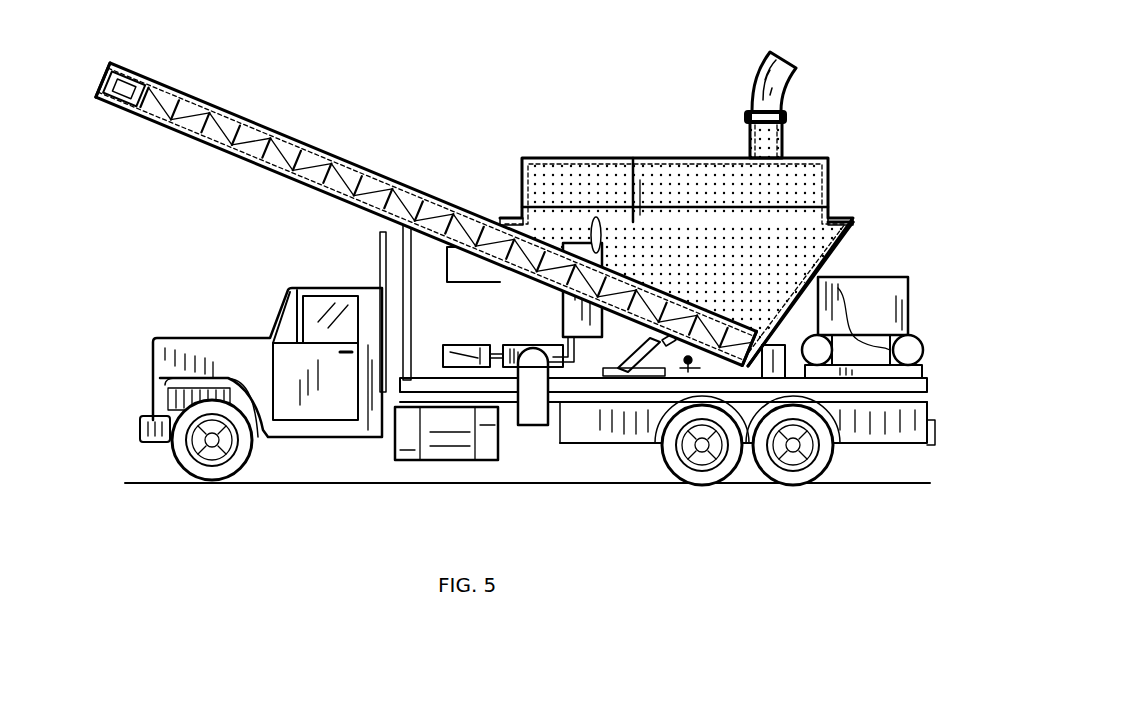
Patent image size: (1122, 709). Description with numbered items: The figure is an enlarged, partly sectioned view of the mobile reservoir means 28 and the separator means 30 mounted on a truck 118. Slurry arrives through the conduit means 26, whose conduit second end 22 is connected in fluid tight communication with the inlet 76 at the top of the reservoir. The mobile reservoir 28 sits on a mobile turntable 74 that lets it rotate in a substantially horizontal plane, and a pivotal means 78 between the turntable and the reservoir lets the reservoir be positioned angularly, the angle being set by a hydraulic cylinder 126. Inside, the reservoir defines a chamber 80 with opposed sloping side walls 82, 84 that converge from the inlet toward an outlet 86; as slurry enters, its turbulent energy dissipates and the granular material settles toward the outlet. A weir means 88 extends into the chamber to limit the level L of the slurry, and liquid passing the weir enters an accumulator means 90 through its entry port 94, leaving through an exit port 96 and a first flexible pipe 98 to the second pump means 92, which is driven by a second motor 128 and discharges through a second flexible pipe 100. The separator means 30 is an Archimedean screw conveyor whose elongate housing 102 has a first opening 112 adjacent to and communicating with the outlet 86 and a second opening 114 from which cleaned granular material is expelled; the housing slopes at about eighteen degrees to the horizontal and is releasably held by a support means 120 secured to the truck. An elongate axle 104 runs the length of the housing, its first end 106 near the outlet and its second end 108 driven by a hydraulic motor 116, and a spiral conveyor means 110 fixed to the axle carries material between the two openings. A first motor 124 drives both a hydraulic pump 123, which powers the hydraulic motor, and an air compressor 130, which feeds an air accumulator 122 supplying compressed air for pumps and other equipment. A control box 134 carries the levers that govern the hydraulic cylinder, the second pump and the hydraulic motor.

The conduit second end 22 is at (788, 107).
The conduit means 26 is at (795, 80).
The mobile reservoir means 28 is at (852, 157).
The separator means 30 is at (415, 120).
The mobile turntable 74 is at (930, 437).
The inlet 76 is at (748, 140).
The pivotal means 78 is at (667, 380).
The chamber 80 is at (667, 187).
The sloping side wall 82 is at (853, 237).
The sloping side wall 84 is at (670, 300).
The outlet 86 is at (707, 312).
The weir means 88 is at (600, 183).
The accumulator means 90 is at (563, 255).
The second pump means 92 is at (520, 405).
The entry port 94 is at (596, 215).
The exit port 96 is at (568, 345).
The first flexible pipe 98 is at (580, 395).
The second flexible pipe 100 is at (524, 342).
The elongate housing 102 is at (330, 150).
The elongate axle 104 is at (248, 122).
The first end 106 is at (742, 402).
The second end 108 is at (148, 127).
The spiral conveyor means 110 is at (320, 186).
The first opening 112 is at (733, 313).
The second opening 114 is at (233, 158).
The hydraulic motor 116 is at (143, 73).
The truck 118 is at (287, 294).
The support means 120 is at (382, 270).
The air accumulator 122 is at (858, 420).
The hydraulic pump 123 is at (832, 290).
The first motor 124 is at (838, 348).
The hydraulic cylinder 126 is at (590, 385).
The second motor 128 is at (447, 349).
The air compressor 130 is at (888, 297).
The control box 134 is at (520, 287).
The level L is at (705, 200).